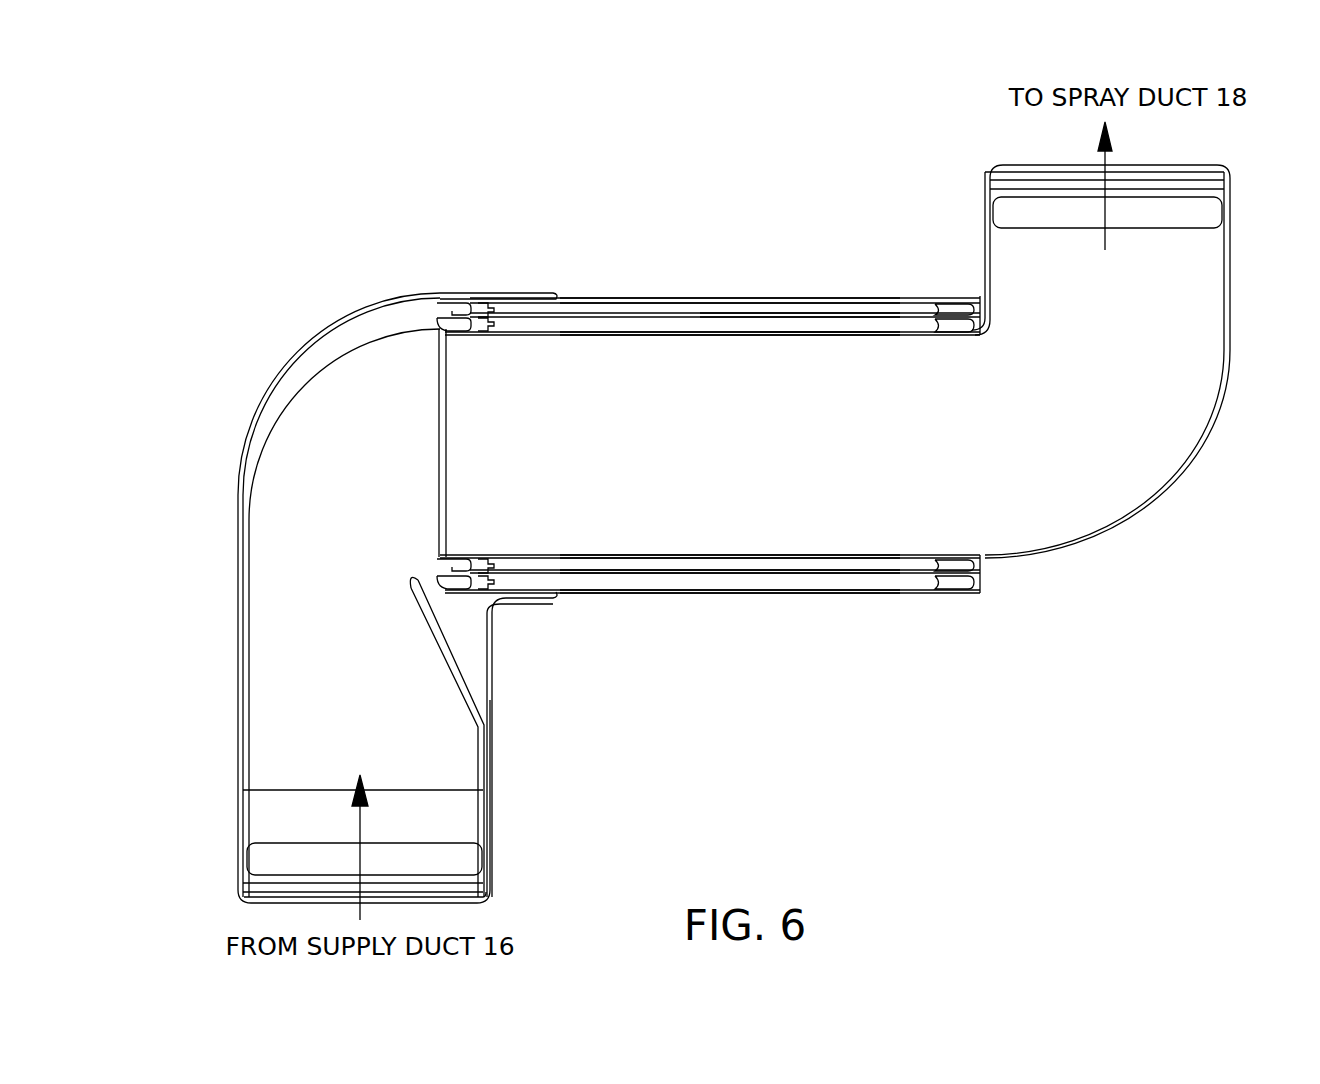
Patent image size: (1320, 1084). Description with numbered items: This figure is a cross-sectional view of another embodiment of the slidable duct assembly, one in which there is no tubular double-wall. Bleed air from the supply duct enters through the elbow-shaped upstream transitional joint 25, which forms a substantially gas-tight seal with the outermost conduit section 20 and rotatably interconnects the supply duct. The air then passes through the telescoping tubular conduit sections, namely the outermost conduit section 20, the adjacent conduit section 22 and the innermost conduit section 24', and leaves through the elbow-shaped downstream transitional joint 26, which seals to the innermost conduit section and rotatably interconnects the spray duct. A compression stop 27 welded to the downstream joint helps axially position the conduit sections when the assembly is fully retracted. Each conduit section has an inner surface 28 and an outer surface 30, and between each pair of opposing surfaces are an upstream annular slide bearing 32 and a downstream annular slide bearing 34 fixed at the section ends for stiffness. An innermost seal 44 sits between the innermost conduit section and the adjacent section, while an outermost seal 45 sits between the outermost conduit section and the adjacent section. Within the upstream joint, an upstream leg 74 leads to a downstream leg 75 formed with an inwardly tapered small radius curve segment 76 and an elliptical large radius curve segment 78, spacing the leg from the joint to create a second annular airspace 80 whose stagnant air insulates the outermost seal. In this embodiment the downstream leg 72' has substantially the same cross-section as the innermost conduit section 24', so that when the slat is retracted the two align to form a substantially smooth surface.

The outermost conduit section 20 is at (862, 299).
The conduit section 22 is at (790, 300).
The innermost conduit section 24' is at (820, 360).
The upstream transitional joint 25 is at (335, 310).
The downstream transitional joint 26 is at (1102, 497).
The compression stop 27 is at (985, 292).
The inner surface 28 is at (638, 320).
The outer surface 30 is at (640, 297).
The upstream annular slide bearing 32 is at (470, 320).
The downstream annular slide bearing 34 is at (946, 303).
The innermost seal 44 is at (486, 334).
The outermost seal 45 is at (490, 303).
The downstream leg 72' is at (313, 332).
The upstream leg 74 is at (258, 692).
The downstream leg 75 is at (388, 342).
The small radius curve segment 76 is at (420, 562).
The large radius curve segment 78 is at (296, 420).
The second annular airspace 80 is at (472, 648).